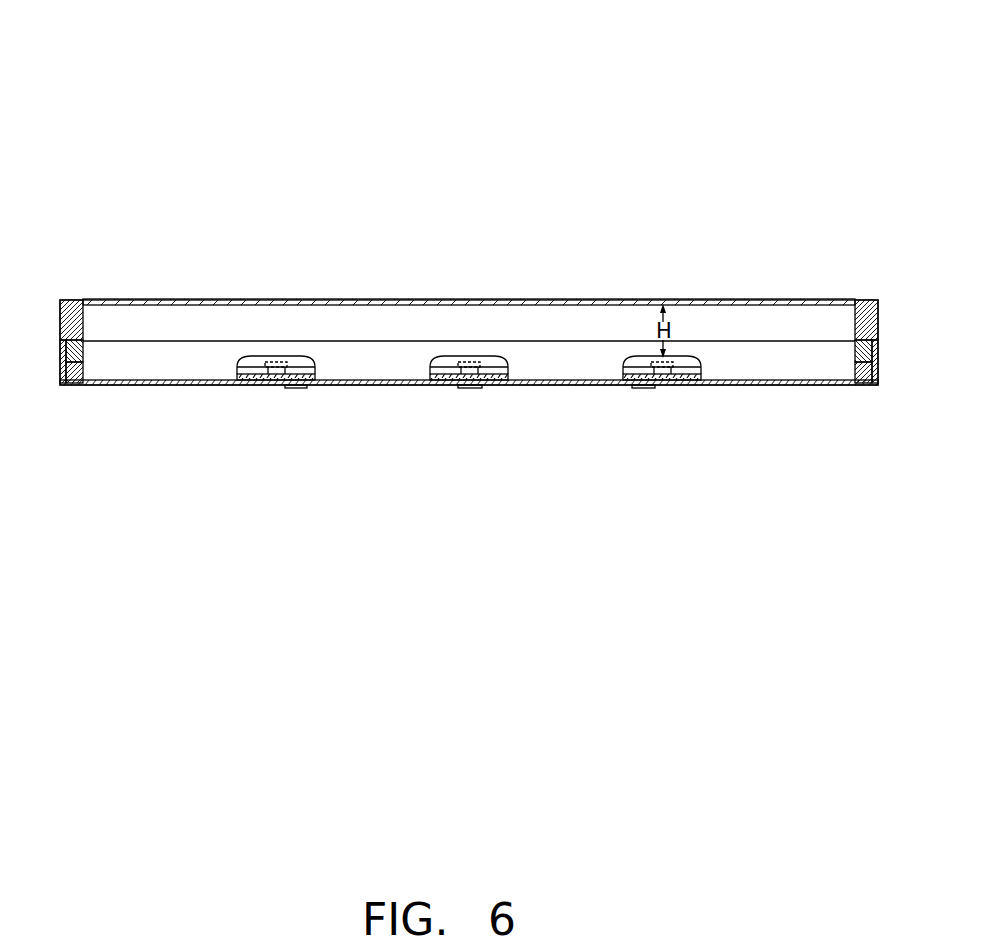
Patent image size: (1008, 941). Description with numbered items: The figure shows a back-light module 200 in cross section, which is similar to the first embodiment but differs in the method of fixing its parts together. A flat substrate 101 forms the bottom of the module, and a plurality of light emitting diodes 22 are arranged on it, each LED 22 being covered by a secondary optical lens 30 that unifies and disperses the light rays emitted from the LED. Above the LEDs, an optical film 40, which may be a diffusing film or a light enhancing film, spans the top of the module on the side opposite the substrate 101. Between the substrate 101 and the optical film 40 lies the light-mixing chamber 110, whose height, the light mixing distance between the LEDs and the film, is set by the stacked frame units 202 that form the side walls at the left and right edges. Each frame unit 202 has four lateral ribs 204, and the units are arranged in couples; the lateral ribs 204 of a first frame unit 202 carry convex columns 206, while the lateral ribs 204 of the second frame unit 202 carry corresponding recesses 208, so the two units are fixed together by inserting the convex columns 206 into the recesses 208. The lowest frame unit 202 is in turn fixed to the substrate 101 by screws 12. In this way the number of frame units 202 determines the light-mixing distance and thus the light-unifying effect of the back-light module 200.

The back-light module 200 is at (386, 50).
The recesses 208 is at (60, 325).
The frame unit 202 is at (84, 321).
The light-mixing chamber 110 is at (202, 356).
The secondary optical lens 30 is at (475, 357).
The optical film 40 is at (735, 299).
The lateral ribs 204 is at (856, 312).
The screws 12 is at (68, 384).
The convex columns 206 is at (62, 350).
The substrate 101 is at (350, 386).
The light emitting diodes 22 is at (666, 371).